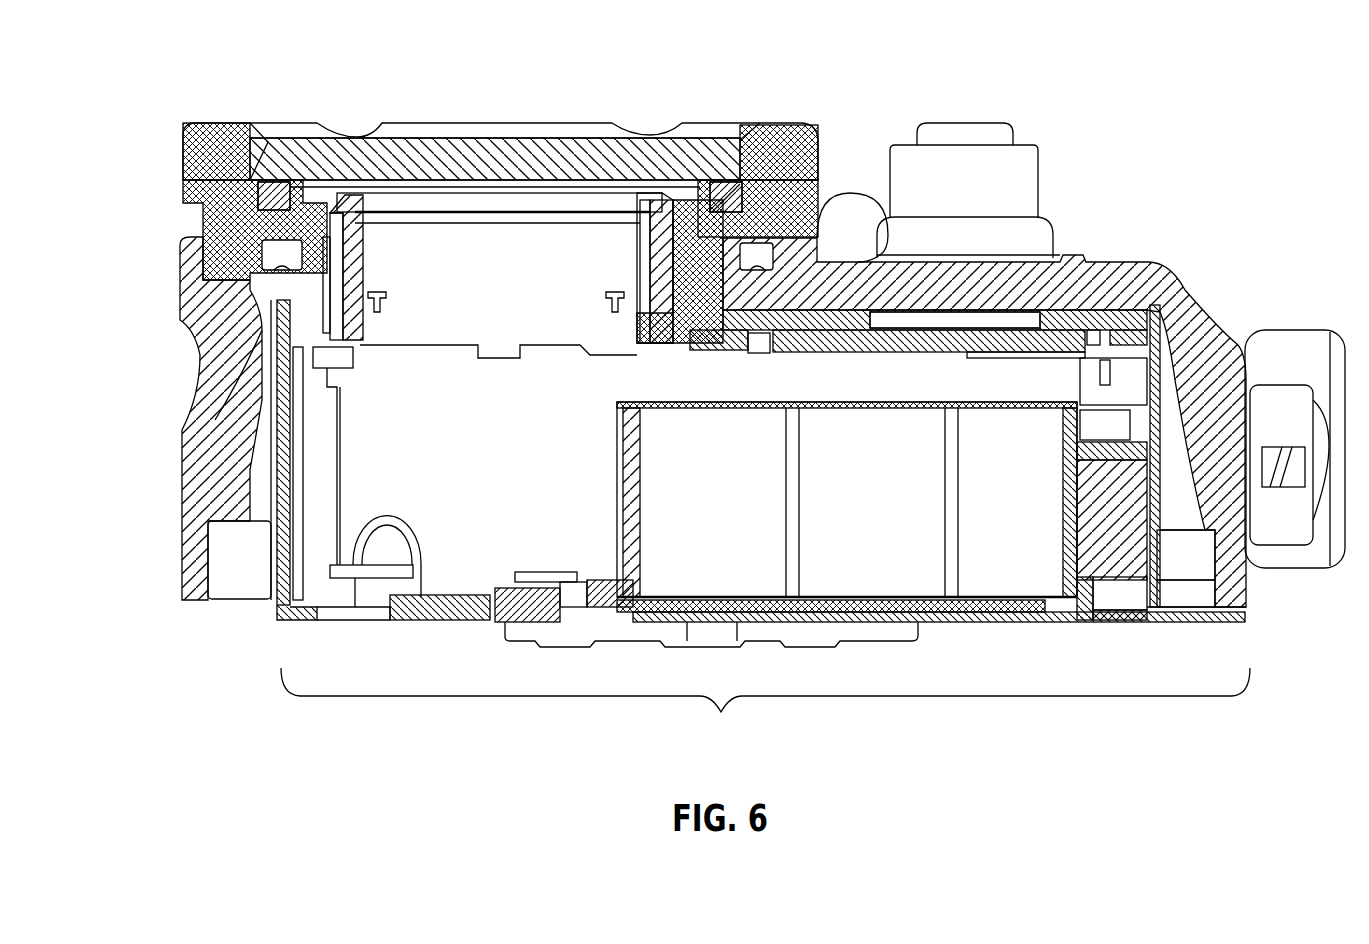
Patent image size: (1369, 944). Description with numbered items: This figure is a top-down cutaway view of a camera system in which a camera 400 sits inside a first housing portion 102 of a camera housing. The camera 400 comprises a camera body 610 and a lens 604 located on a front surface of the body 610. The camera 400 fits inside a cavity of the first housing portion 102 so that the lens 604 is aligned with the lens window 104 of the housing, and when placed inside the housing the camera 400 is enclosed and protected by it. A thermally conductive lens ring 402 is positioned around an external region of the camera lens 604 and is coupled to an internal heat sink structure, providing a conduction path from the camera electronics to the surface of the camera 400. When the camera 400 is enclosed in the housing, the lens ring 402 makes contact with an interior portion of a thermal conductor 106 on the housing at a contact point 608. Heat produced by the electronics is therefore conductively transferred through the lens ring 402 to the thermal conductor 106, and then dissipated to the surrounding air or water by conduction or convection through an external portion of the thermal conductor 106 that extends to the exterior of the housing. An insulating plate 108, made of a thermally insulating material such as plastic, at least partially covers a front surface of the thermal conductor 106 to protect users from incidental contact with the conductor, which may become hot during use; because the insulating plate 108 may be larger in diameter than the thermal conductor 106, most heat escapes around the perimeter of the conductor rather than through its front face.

The first housing portion 102 is at (212, 455).
The lens window 104 is at (335, 137).
The thermal conductor 106 is at (212, 206).
The insulating plate 108 is at (792, 148).
The camera 400 is at (1135, 597).
The lens ring 402 is at (345, 358).
The lens 604 is at (548, 200).
The contact point 608 is at (697, 308).
The camera body 610 is at (765, 713).